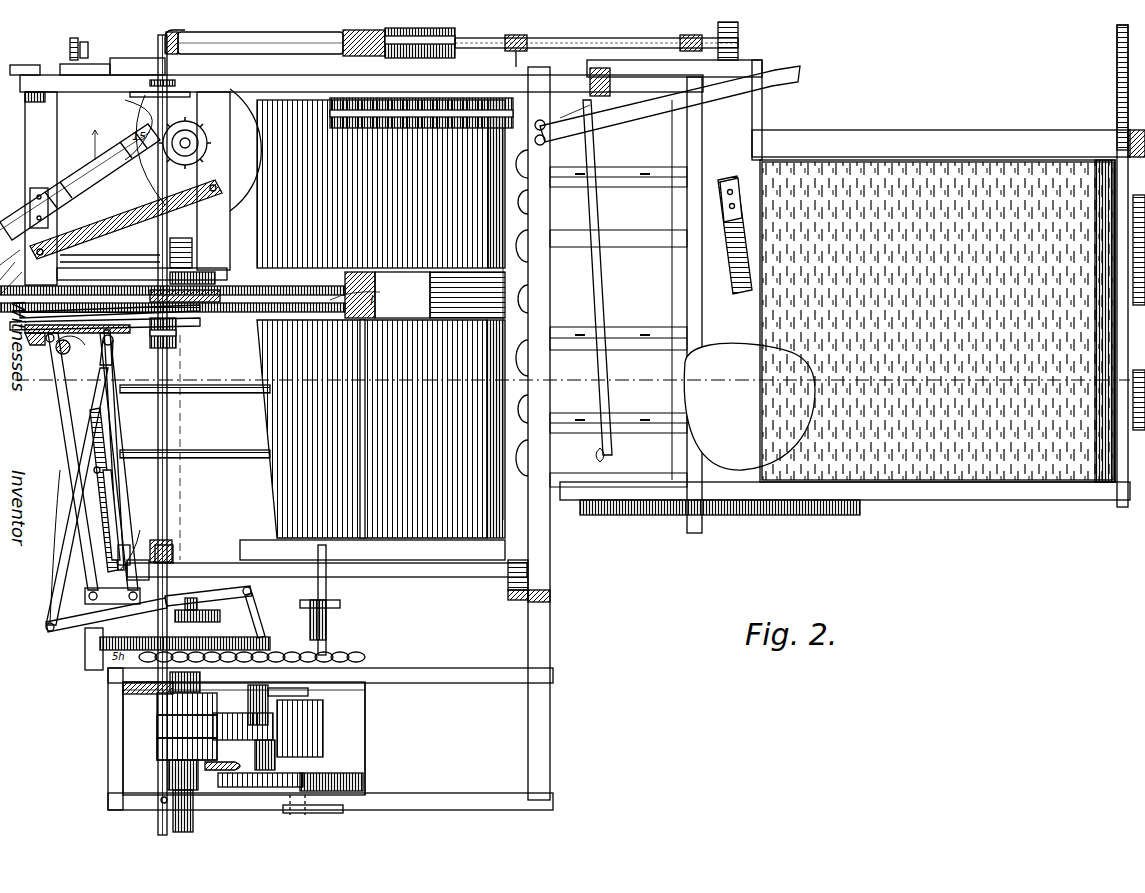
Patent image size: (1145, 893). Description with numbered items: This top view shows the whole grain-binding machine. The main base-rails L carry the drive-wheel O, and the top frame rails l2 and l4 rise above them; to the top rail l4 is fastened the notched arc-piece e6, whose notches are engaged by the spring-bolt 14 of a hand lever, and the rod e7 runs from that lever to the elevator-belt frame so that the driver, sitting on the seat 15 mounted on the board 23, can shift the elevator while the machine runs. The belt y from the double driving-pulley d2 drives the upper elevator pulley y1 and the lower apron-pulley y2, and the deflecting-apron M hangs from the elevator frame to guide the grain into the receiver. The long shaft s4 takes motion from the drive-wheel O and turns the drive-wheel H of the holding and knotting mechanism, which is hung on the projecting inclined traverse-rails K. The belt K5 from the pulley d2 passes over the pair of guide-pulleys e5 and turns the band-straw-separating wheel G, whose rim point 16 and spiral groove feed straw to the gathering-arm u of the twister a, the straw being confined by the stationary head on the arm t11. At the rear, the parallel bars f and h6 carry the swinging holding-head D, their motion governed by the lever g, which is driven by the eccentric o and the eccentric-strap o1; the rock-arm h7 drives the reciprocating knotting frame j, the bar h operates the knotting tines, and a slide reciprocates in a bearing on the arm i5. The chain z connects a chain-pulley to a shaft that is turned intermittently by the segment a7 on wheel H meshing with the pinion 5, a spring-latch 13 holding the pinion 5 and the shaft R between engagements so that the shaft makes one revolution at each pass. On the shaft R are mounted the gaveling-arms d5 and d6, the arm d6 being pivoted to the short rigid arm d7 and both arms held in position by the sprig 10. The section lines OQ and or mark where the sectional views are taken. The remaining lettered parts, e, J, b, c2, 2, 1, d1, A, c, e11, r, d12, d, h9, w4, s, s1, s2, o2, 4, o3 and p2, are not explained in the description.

The section line o r o r or is at (175, 34).
The guide-pulleys e5 is at (180, 43).
The belt K5 is at (260, 43).
The sleeve e is at (345, 43).
The double driving-pulley d2 is at (427, 40).
The belt y is at (596, 34).
The pulley y1 is at (531, 43).
The lower apron-pulley y2 is at (709, 40).
The notched arc-piece e6 is at (83, 44).
The gathering-arm u is at (112, 62).
The frame posts J is at (127, 182).
The band-twister a is at (142, 273).
The arm t11 is at (160, 253).
The sprig 10 is at (202, 274).
The slanted shaft b is at (111, 209).
The point of separator 16 is at (185, 147).
The band-straw-separating wheel G is at (193, 150).
The spring-bolt 14 is at (475, 105).
The traverse-rails K is at (421, 113).
The forward gaveling-arm d6 is at (172, 281).
The gaveling-arm d5 is at (190, 308).
The bar c2 is at (137, 317).
The short rigid arm d7 is at (172, 294).
The drive-wheel O is at (425, 295).
The lower drum 2 is at (381, 429).
The drum 1 is at (395, 429).
The rails d1 is at (195, 411).
The top frame rail l2 is at (327, 560).
The top rail l4 is at (539, 433).
The main base-rails L is at (458, 643).
The deflecting-apron M is at (511, 324).
The rod e7 is at (610, 281).
The board 23 is at (728, 239).
The driver's seat 15 is at (749, 406).
The box A is at (937, 321).
The section line O Q O Q OQ is at (572, 378).
The swinging holding-head D is at (110, 305).
The bar c is at (77, 319).
The hub e11 is at (147, 333).
The reciprocating frame j is at (70, 350).
The block r is at (39, 347).
The link d12 is at (117, 350).
The parallel bar h6 is at (93, 461).
The bar h is at (76, 496).
The main parallel bar f is at (112, 450).
The rack d is at (105, 490).
The link h9 is at (135, 530).
The shaft R is at (171, 530).
The lever g is at (112, 605).
The arm i5 is at (106, 620).
The rock-arm h7 is at (220, 612).
The eccentric o is at (197, 610).
The eccentric-strap o1 is at (185, 634).
The bracket w4 is at (319, 600).
The chain z is at (252, 644).
The drive-wheel H is at (330, 738).
The gear s is at (177, 726).
The gear s1 is at (175, 726).
The gear s2 is at (175, 749).
The hub o2 is at (195, 682).
The gear 4 is at (271, 711).
The long shaft s4 is at (299, 721).
The lever o3 is at (227, 759).
The segment a7 is at (260, 772).
The pinion 5 is at (331, 774).
The spring-latch 13 is at (313, 811).
The shaft end p2 is at (192, 802).